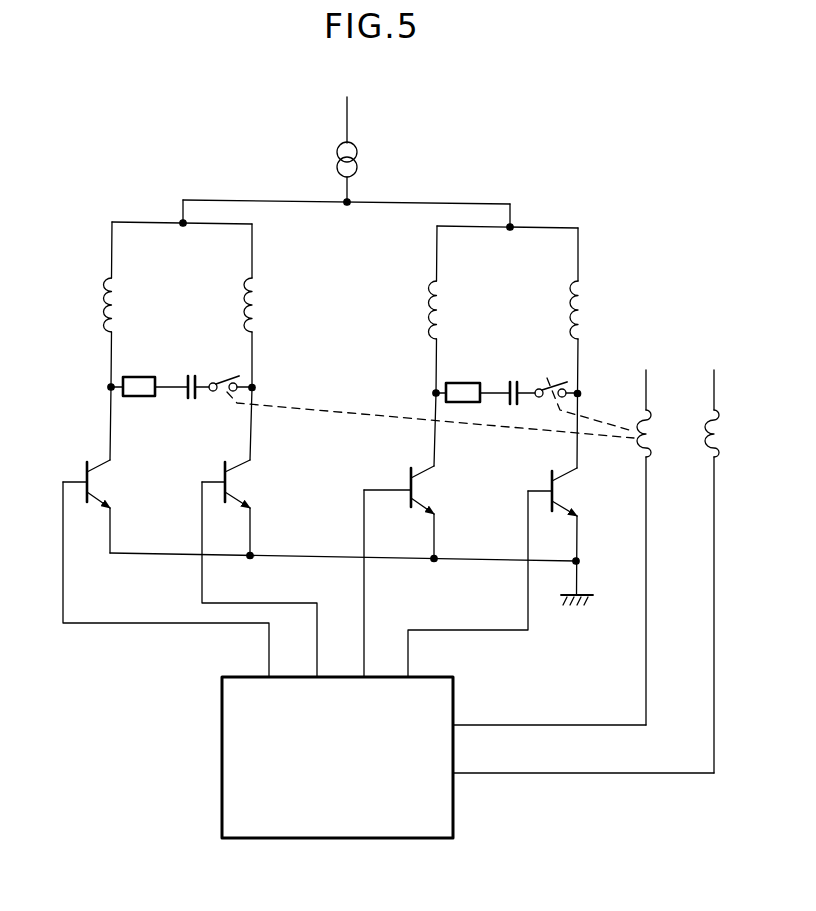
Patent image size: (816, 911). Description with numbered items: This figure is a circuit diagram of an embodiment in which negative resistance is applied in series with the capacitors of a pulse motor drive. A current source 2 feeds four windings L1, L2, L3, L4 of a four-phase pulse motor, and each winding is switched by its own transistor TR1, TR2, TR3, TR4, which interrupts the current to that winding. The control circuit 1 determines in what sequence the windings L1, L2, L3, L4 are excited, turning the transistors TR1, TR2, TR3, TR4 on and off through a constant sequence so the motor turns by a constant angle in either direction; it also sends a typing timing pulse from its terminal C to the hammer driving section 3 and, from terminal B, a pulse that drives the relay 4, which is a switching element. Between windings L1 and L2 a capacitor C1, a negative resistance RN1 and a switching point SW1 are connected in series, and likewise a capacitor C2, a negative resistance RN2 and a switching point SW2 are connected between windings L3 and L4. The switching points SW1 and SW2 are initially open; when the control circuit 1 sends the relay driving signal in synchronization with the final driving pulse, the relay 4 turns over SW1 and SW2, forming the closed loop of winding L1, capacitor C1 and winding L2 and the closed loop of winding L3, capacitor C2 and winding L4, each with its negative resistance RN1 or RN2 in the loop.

The control circuit 1 is at (233, 728).
The current source 2 is at (358, 151).
The hammer driving section 3 is at (727, 433).
The relay 4 is at (660, 431).
The winding L1 is at (122, 290).
The winding L2 is at (264, 292).
The winding L3 is at (447, 293).
The winding L4 is at (591, 293).
The capacitor C1 is at (187, 373).
The capacitor C2 is at (509, 380).
The negative resistance RN1 is at (138, 380).
The negative resistance RN2 is at (462, 386).
The switching point SW1 is at (228, 374).
The switching point SW2 is at (555, 383).
The transistor TR1 is at (107, 470).
The transistor TR2 is at (247, 472).
The transistor TR3 is at (420, 476).
The transistor TR4 is at (573, 494).